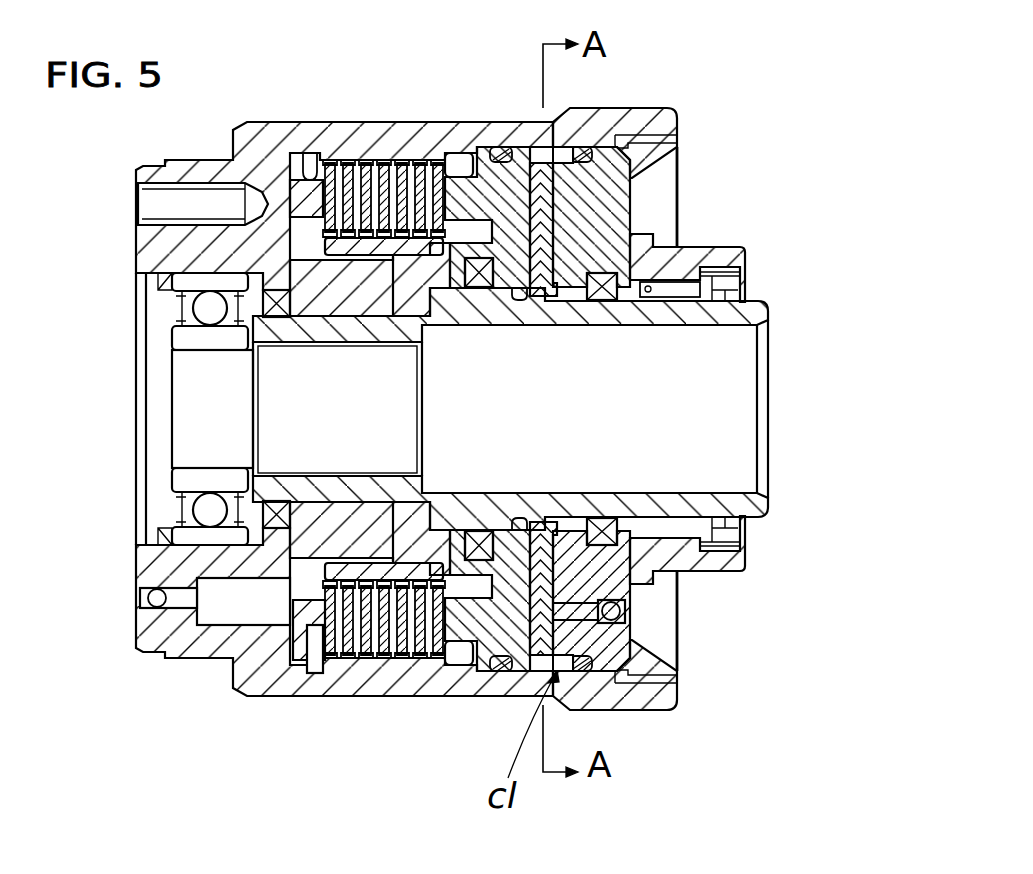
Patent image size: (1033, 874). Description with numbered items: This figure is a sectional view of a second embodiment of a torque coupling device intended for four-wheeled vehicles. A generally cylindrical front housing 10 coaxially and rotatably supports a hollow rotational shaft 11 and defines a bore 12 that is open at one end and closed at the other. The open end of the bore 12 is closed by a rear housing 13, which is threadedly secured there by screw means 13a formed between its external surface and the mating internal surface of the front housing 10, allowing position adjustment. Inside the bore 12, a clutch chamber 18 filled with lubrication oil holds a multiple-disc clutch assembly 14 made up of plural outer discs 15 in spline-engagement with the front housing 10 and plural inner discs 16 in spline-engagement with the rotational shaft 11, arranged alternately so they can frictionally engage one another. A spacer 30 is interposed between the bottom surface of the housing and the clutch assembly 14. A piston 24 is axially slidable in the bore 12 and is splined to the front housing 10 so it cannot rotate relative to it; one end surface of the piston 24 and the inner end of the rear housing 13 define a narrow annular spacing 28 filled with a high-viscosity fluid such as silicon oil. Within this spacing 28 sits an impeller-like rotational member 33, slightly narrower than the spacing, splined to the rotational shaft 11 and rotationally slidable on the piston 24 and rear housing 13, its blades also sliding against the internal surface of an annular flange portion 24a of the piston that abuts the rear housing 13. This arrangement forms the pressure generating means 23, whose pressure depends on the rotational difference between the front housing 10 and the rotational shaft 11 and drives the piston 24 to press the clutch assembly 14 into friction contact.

The front housing 10 is at (263, 121).
The rotational shaft 11 is at (740, 505).
The bore 12 is at (450, 140).
The rear housing 13 is at (640, 160).
The screw means 13a is at (680, 708).
The multiple-disc clutch assembly 14 is at (378, 138).
The outer discs 15 is at (407, 660).
The inner discs 16 is at (376, 598).
The clutch chamber 18 is at (310, 582).
The pressure generating means 23 is at (555, 200).
The piston 24 is at (497, 147).
The annular flange portion 24a is at (549, 147).
The narrow annular spacing 28 is at (542, 630).
The spacer 30 is at (313, 632).
The rotational member 33 is at (538, 160).